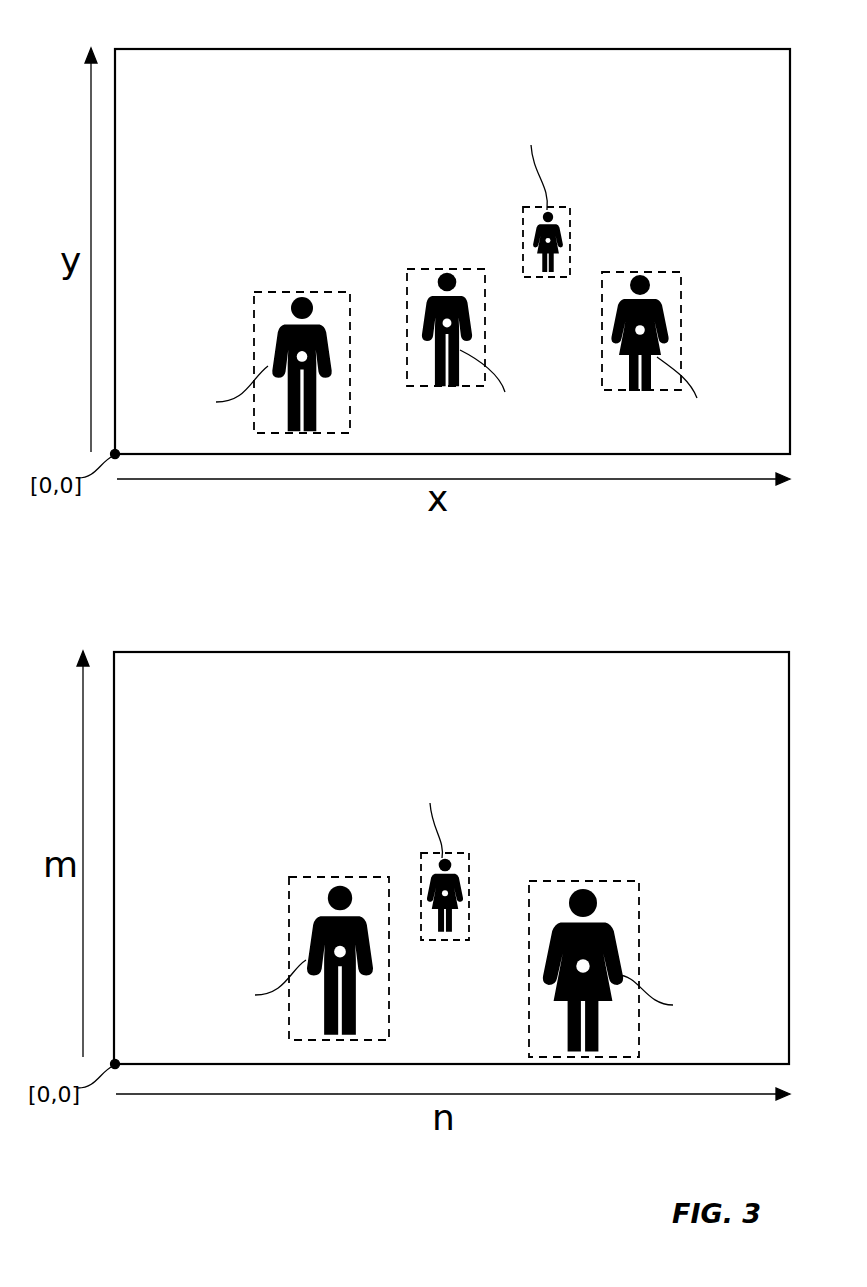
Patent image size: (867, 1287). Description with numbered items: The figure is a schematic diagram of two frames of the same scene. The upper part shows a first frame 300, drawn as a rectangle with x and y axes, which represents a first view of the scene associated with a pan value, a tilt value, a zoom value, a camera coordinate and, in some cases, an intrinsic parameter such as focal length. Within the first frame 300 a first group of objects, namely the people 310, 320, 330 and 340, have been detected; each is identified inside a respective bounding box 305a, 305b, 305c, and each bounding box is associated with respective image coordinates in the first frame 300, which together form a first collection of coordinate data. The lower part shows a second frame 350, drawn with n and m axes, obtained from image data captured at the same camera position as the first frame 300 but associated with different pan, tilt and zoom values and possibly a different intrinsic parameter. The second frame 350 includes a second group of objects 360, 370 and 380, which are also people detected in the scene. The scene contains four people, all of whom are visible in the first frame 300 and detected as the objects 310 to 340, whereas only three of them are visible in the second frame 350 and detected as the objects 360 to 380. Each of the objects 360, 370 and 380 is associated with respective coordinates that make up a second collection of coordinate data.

The first frame 300 is at (147, 49).
The bounding box 305a is at (350, 385).
The bounding box 305b is at (407, 312).
The bounding box 305c is at (530, 276).
The person 310 is at (272, 338).
The person 320 is at (476, 329).
The person 330 is at (549, 276).
The person 340 is at (662, 318).
The second frame 350 is at (278, 652).
The object 360 is at (357, 1002).
The object 370 is at (447, 940).
The object 380 is at (597, 905).